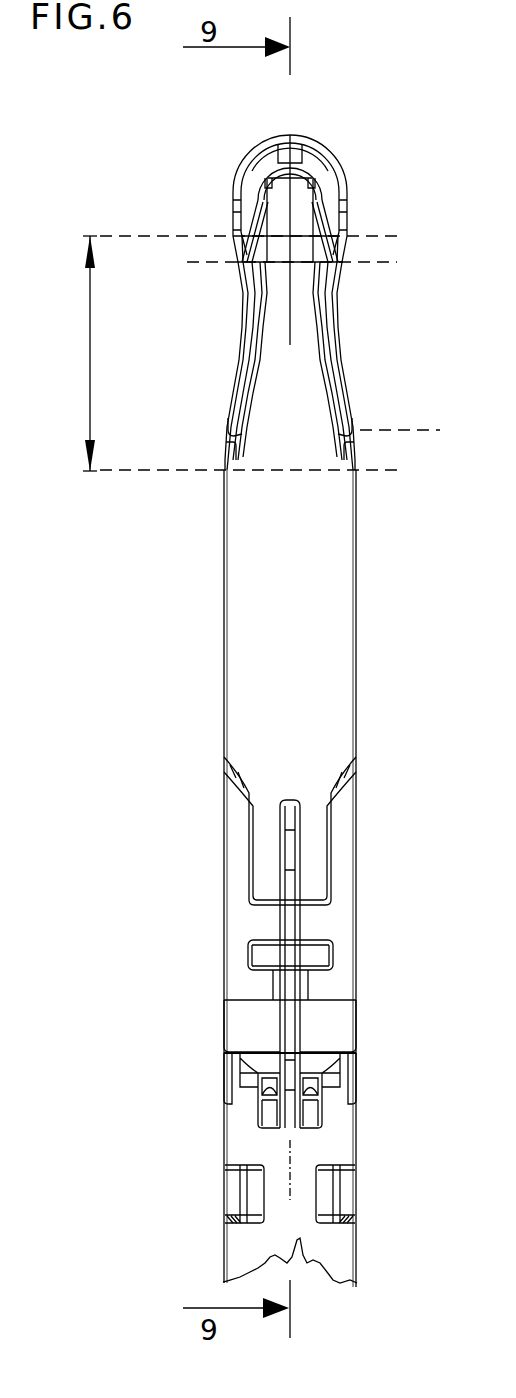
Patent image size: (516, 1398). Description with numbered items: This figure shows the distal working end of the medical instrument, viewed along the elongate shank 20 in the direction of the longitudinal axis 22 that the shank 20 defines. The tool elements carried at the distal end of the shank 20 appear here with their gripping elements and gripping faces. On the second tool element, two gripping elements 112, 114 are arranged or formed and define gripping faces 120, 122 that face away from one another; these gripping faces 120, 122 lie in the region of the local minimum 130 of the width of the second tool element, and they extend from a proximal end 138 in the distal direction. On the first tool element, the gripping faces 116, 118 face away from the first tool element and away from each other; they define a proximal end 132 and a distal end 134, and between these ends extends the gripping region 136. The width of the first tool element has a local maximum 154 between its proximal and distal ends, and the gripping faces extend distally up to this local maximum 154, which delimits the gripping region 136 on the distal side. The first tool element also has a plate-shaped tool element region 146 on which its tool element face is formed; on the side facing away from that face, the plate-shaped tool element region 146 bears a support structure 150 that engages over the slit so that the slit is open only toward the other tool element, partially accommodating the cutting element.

The elongate shank 20 is at (278, 1197).
The longitudinal axis 22 is at (290, 1153).
The gripping element 112 is at (205, 370).
The gripping element 114 is at (375, 323).
The gripping face 116 is at (333, 370).
The gripping face 118 is at (241, 402).
The gripping face 120 is at (243, 335).
The gripping face 122 is at (338, 300).
The local minimum 130 is at (215, 298).
The proximal end 132 is at (228, 468).
The distal end 134 is at (233, 236).
The gripping region 136 is at (90, 388).
The proximal end 138 is at (349, 432).
The plate-shaped tool element region 146 is at (313, 158).
The support structure 150 is at (282, 198).
The local maximum 154 is at (347, 236).